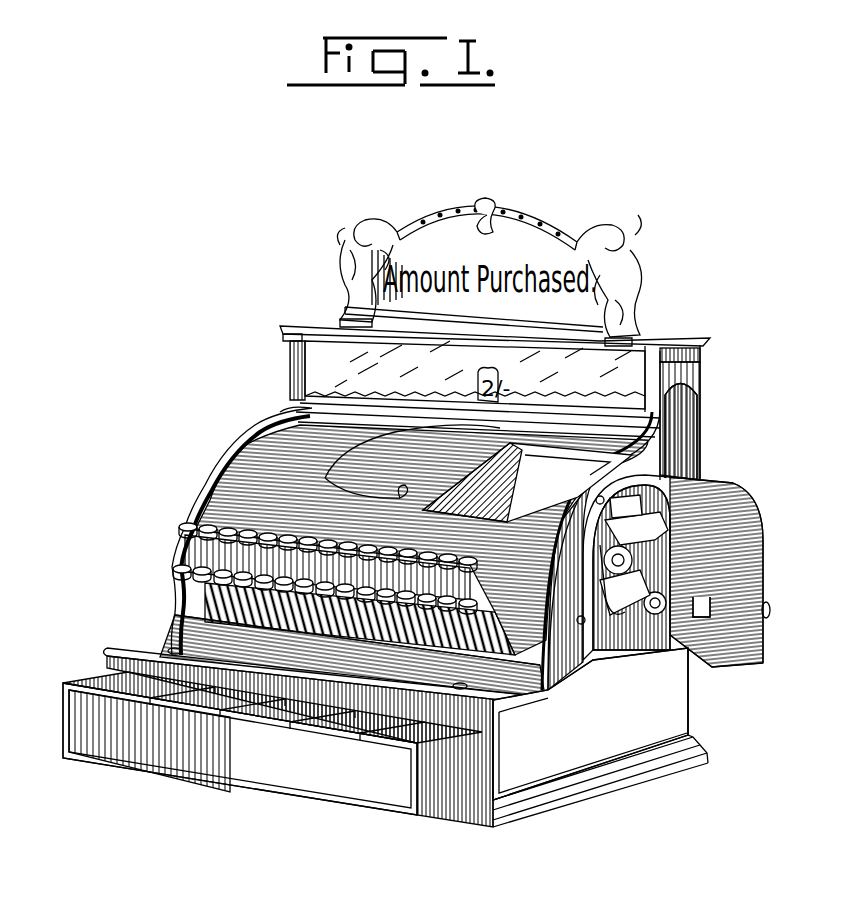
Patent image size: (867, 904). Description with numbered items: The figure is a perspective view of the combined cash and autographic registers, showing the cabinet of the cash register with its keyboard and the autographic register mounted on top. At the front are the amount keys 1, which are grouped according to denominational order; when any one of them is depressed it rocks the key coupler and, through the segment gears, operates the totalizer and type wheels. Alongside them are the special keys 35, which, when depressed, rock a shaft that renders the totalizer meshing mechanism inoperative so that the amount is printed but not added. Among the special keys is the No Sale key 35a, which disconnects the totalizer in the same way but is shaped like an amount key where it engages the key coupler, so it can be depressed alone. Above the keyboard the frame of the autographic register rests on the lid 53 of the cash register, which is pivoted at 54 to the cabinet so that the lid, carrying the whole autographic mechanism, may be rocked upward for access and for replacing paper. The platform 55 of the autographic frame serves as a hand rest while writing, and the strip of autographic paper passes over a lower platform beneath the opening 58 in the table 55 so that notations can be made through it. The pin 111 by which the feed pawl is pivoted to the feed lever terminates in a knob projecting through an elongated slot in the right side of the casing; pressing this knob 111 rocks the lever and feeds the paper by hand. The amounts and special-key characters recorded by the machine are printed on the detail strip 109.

The amount keys 1 is at (185, 525).
The special keys 35 is at (172, 558).
The No Sale key 35a is at (500, 605).
The lid 53 is at (222, 466).
The pivot of the lid 54 is at (290, 404).
The platform 55 is at (560, 476).
The opening 58 is at (547, 462).
The detail strip 109 is at (597, 657).
The pin with knob 111 is at (687, 476).